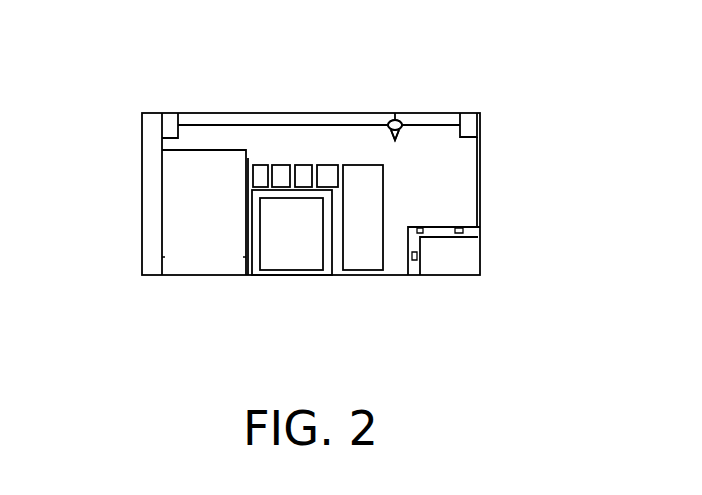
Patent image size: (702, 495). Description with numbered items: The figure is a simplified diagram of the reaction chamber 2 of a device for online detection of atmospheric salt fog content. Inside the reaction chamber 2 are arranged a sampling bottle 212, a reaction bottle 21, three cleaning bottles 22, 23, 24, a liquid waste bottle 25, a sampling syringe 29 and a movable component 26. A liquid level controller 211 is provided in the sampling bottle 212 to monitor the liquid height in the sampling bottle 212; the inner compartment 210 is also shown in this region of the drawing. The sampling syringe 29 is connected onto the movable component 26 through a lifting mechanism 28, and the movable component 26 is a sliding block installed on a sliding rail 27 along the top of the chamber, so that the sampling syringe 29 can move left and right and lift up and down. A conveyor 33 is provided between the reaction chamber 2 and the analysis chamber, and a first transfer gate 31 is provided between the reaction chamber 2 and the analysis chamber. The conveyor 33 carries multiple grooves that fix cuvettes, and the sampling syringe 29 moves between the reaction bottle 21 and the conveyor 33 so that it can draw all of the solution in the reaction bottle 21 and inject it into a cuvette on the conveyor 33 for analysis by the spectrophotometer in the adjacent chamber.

The reaction chamber 2 is at (282, 153).
The reaction bottle 21 is at (232, 153).
The cleaning bottle 22 is at (237, 109).
The cleaning bottle 23 is at (272, 109).
The cleaning bottle 24 is at (306, 109).
The liquid waste bottle 25 is at (349, 150).
The movable component 26 is at (376, 82).
The sliding rail 27 is at (445, 80).
The lifting mechanism 28 is at (463, 128).
The sampling syringe 29 is at (464, 155).
The first transfer gate 31 is at (520, 186).
The conveyor 33 is at (476, 258).
The inner compartment 210 is at (315, 274).
The liquid level controller 211 is at (128, 210).
The sampling bottle 212 is at (156, 212).